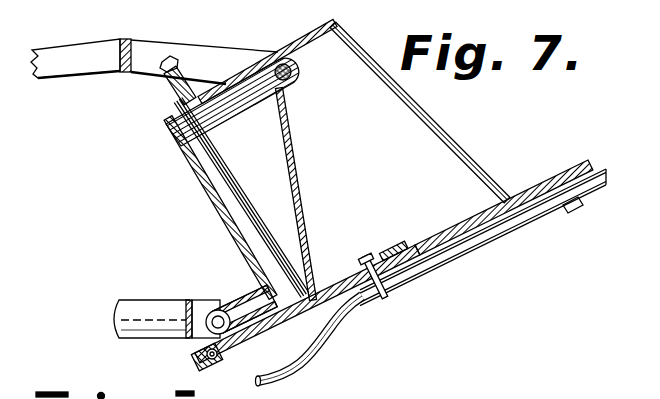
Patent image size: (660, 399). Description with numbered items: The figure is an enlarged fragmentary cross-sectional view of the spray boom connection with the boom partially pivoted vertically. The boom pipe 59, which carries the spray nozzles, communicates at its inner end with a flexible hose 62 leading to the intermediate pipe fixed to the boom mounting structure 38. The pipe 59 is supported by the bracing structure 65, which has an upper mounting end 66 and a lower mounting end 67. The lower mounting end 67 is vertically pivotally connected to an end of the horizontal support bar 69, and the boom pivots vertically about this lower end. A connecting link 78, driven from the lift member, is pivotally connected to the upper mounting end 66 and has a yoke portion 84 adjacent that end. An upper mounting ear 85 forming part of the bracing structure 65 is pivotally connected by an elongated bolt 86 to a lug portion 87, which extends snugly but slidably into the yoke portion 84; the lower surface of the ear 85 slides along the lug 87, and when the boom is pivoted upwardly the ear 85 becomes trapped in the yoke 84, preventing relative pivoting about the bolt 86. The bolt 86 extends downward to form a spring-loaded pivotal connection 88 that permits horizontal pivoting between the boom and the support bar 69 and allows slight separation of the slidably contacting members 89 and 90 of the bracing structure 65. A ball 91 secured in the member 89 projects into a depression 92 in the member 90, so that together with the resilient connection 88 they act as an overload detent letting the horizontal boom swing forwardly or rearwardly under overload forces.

The connecting link 78 is at (98, 50).
The yoke portion 84 is at (192, 58).
The upper mounting ear 85 is at (275, 53).
The boom mounting structure 38 is at (437, 124).
The upper mounting end 66 is at (302, 72).
The pivotal connection 88 is at (165, 87).
The elongated bolt 86 is at (177, 111).
The lug portion 87 is at (230, 117).
The bracing structure 65 is at (512, 196).
The pipe 59 is at (470, 243).
The horizontal support bar 69 is at (150, 306).
The lower mounting end 67 is at (218, 305).
The slidably contacting member 90 is at (247, 298).
The slidably contacting member 89 is at (265, 331).
The ball 91 is at (192, 348).
The depression 92 is at (223, 356).
The flexible hose 62 is at (307, 356).